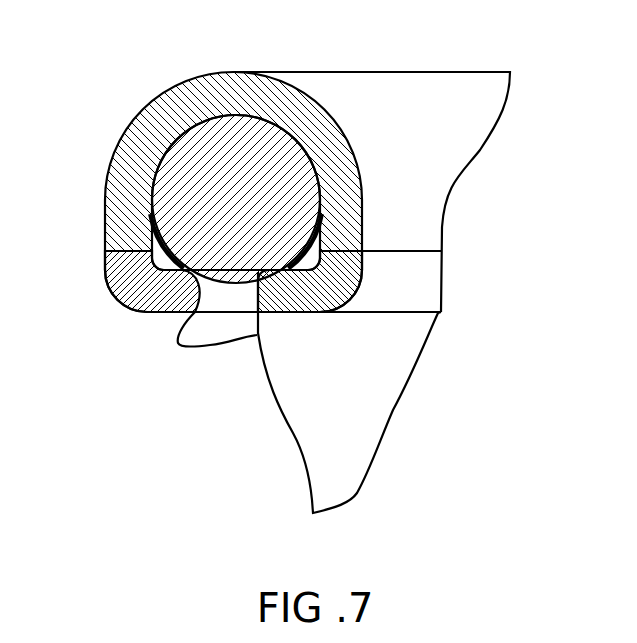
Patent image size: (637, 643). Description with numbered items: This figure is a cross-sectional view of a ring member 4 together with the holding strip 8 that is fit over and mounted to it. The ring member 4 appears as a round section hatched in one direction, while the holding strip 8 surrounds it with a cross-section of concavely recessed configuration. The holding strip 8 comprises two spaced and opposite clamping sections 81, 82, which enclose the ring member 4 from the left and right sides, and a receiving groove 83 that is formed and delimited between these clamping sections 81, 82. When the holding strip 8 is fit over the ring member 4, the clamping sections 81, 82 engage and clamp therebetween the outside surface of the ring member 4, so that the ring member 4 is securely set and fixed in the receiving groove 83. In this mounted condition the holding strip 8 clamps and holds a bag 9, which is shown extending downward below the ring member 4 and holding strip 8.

The ring member 4 is at (203, 142).
The holding strip 8 is at (257, 98).
The bag 9 is at (270, 398).
The clamping section 81 is at (125, 200).
The clamping section 82 is at (340, 222).
The receiving groove 83 is at (288, 148).